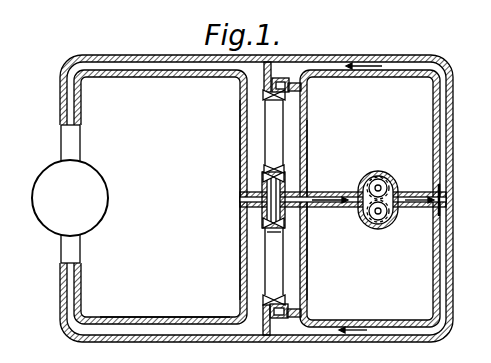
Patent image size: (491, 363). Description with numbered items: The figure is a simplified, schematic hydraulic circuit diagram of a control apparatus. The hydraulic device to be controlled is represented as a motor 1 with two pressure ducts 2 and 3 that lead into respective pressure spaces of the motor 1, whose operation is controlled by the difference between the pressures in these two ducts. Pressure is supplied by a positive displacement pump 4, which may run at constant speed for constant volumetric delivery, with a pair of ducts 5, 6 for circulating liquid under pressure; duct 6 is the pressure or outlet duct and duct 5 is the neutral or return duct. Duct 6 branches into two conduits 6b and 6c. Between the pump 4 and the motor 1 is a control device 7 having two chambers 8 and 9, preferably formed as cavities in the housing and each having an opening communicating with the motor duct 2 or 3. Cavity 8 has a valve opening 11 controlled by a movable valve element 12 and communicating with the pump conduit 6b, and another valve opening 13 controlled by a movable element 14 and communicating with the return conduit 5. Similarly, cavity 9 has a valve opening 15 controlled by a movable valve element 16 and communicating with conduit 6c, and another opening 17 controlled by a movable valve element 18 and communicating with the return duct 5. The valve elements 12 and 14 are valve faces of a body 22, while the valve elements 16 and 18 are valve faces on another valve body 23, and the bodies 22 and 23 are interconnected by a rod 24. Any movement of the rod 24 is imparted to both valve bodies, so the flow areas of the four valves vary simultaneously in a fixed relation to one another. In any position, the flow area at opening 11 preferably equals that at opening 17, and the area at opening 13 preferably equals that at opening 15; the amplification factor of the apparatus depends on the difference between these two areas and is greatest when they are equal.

The motor 1 is at (106, 180).
The pressure duct 2 is at (175, 77).
The pressure duct 3 is at (163, 323).
The positive displacement pump 4 is at (365, 227).
The return duct 5 is at (342, 208).
The pressure duct 6 is at (420, 192).
The pump conduit 6b is at (399, 63).
The pump conduit 6c is at (371, 331).
The control device 7 is at (241, 172).
The chamber (cavity) 8 is at (298, 117).
The chamber (cavity) 9 is at (300, 273).
The valve opening 11 is at (290, 96).
The movable valve element 12 is at (262, 94).
The valve opening 13 is at (285, 174).
The movable valve element 14 is at (284, 170).
The valve opening 15 is at (289, 304).
The movable valve element 16 is at (263, 301).
The valve opening 17 is at (285, 227).
The movable valve element 18 is at (264, 232).
The valve body 22 is at (265, 132).
The valve body 23 is at (265, 262).
The rod 24 is at (262, 209).